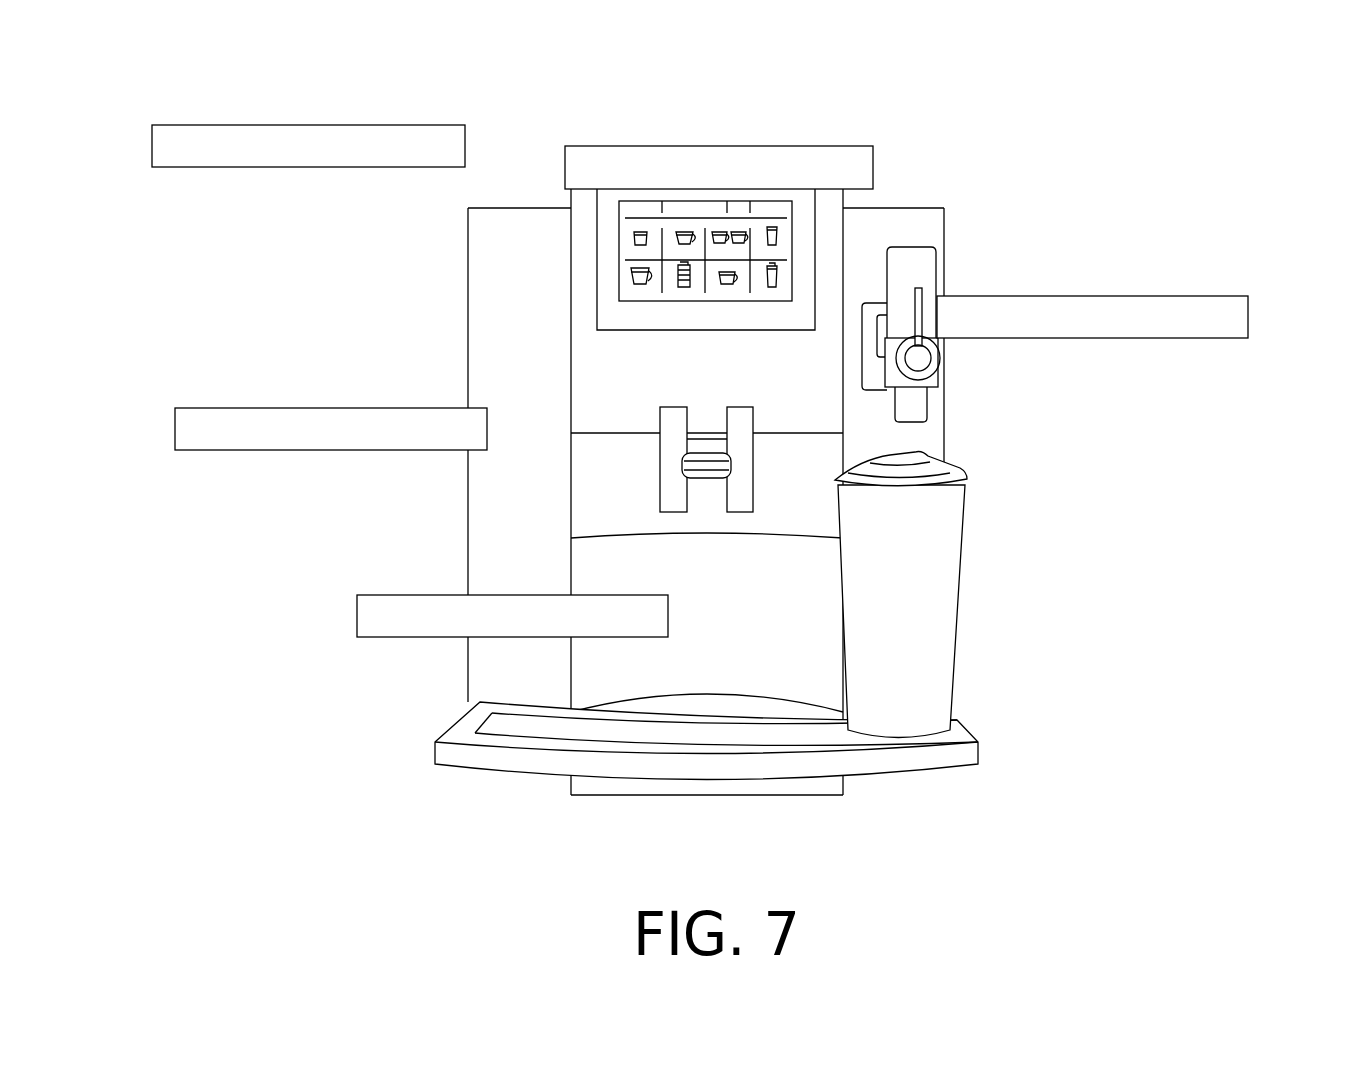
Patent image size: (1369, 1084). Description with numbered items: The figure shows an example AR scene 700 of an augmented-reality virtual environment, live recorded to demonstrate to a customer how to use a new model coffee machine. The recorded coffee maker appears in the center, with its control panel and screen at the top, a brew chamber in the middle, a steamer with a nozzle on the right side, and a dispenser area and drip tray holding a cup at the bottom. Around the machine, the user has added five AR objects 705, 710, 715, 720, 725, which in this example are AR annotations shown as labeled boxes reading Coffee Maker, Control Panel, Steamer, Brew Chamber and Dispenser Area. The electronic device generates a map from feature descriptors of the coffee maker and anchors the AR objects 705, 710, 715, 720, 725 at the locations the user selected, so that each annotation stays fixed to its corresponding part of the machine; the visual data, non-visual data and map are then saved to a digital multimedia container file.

The AR scene 700 is at (1215, 73).
The AR object 705 is at (152, 146).
The AR object 710 is at (565, 162).
The AR object 715 is at (1248, 315).
The AR object 720 is at (175, 430).
The AR object 725 is at (357, 618).